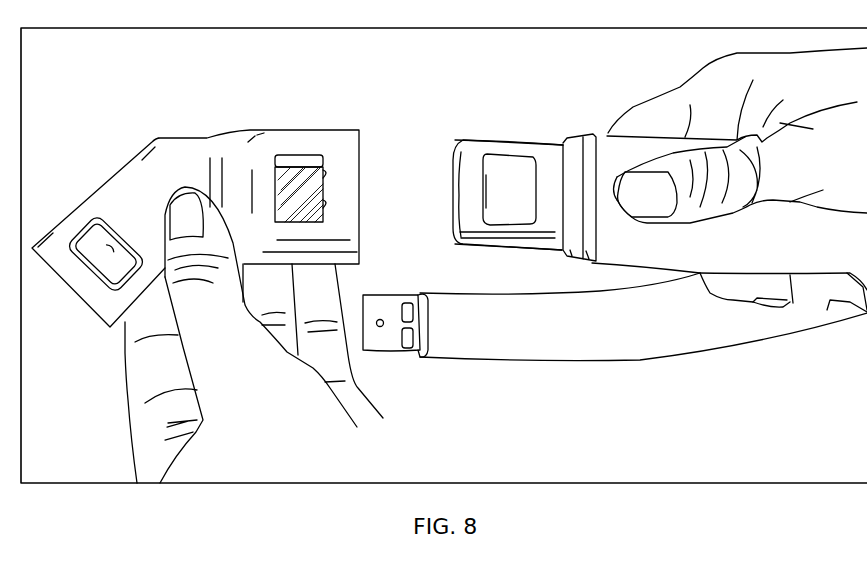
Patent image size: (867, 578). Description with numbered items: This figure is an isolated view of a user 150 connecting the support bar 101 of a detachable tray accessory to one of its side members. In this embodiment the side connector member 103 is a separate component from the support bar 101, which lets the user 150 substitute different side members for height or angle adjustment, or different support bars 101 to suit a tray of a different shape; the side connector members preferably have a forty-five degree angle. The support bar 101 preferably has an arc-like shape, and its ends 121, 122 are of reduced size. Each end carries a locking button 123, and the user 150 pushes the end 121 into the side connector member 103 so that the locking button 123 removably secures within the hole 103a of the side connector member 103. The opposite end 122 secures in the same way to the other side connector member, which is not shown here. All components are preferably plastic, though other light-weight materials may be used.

The support bar 101 is at (600, 133).
The side connector member 103 is at (297, 116).
The hole 103a is at (310, 167).
The end 121 is at (517, 140).
The end 122 is at (395, 353).
The locking button 123 is at (502, 157).
The user 150 is at (760, 50).